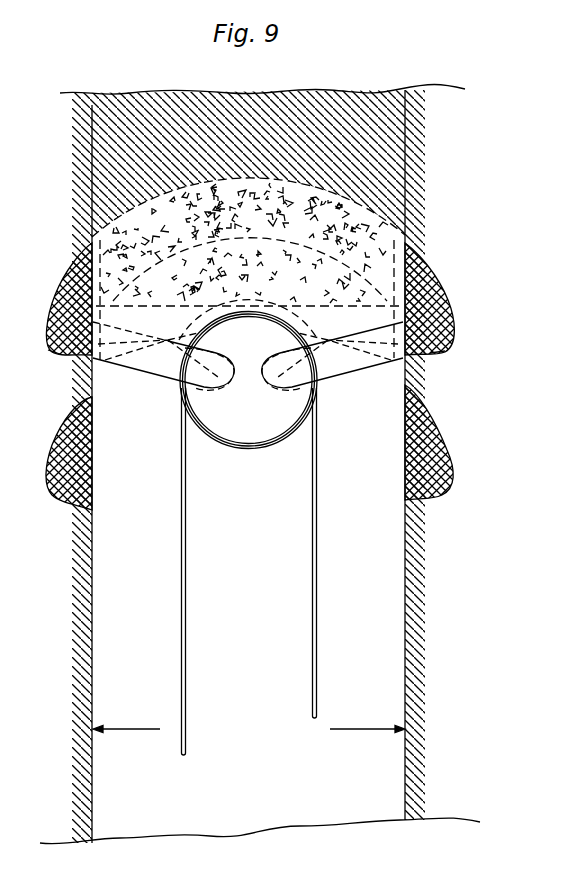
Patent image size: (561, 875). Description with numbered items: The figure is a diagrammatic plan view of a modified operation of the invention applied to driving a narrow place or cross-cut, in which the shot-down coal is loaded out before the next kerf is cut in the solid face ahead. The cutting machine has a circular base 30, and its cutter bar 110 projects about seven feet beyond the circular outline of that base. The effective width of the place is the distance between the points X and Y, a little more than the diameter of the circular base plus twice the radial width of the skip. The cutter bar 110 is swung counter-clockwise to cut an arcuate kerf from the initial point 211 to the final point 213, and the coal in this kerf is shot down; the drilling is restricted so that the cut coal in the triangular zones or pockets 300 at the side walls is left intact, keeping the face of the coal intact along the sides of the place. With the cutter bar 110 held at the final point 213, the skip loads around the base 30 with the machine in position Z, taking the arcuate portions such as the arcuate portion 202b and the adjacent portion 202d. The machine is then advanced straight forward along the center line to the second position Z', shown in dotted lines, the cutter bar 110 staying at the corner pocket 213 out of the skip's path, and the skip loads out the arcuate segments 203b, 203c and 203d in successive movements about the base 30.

The triangular zone or pocket 300 is at (440, 273).
The initial point 211 is at (437, 348).
The final point 213 is at (48, 351).
The cutter bar 110 is at (347, 366).
The circular base 30 is at (263, 433).
The arcuate segment 203b is at (251, 211).
The arcuate segment 203c is at (146, 242).
The rock zone 203d is at (348, 235).
The arcuate portion 202b is at (190, 274).
The inner rock zone 202d is at (310, 276).
The first machine position Z is at (287, 446).
The second machine position Z' is at (253, 402).
The width reference point X is at (105, 732).
The width reference point Y is at (384, 732).